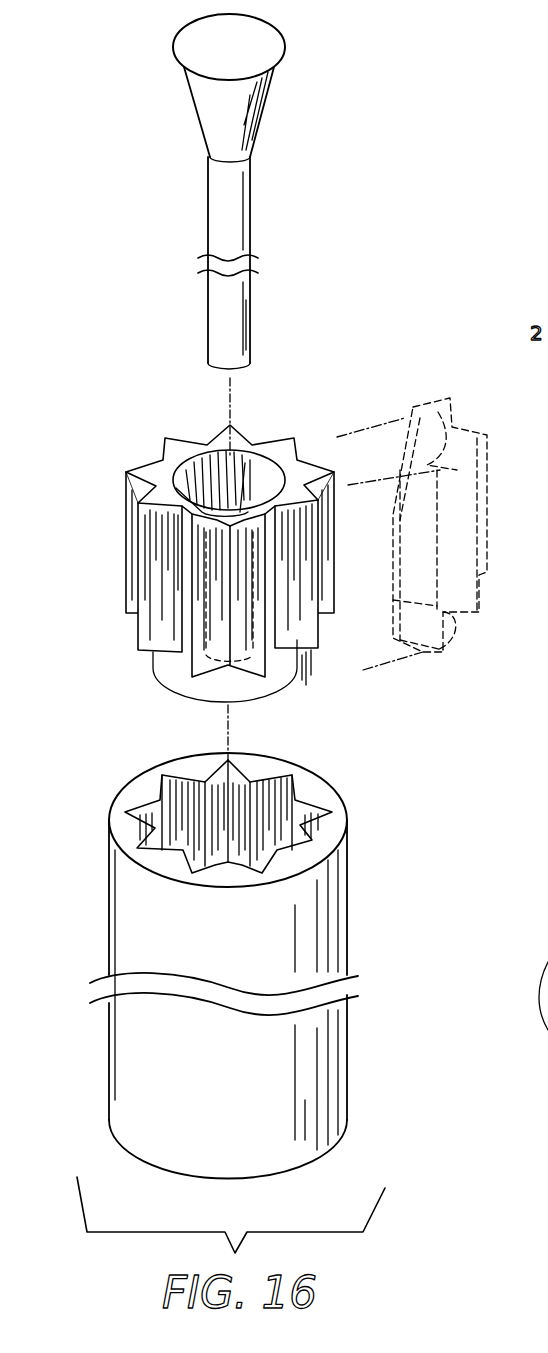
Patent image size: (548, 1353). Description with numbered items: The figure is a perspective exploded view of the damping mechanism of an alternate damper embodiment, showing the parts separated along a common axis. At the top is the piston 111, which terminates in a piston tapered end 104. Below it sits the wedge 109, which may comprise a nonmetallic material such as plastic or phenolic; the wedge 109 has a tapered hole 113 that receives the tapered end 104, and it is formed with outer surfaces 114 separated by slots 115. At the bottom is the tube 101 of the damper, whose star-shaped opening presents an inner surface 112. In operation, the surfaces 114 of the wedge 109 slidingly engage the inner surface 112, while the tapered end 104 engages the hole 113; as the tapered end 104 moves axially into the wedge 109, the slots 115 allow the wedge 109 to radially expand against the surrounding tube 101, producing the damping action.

The outer tube 101 is at (318, 908).
The piston tapered end 104 is at (220, 50).
The wedge 109 is at (261, 539).
The piston 111 is at (228, 208).
The inner surface 112 is at (183, 787).
The tapered hole 113 is at (200, 490).
The surfaces 114 is at (165, 458).
The slots 115 is at (150, 492).